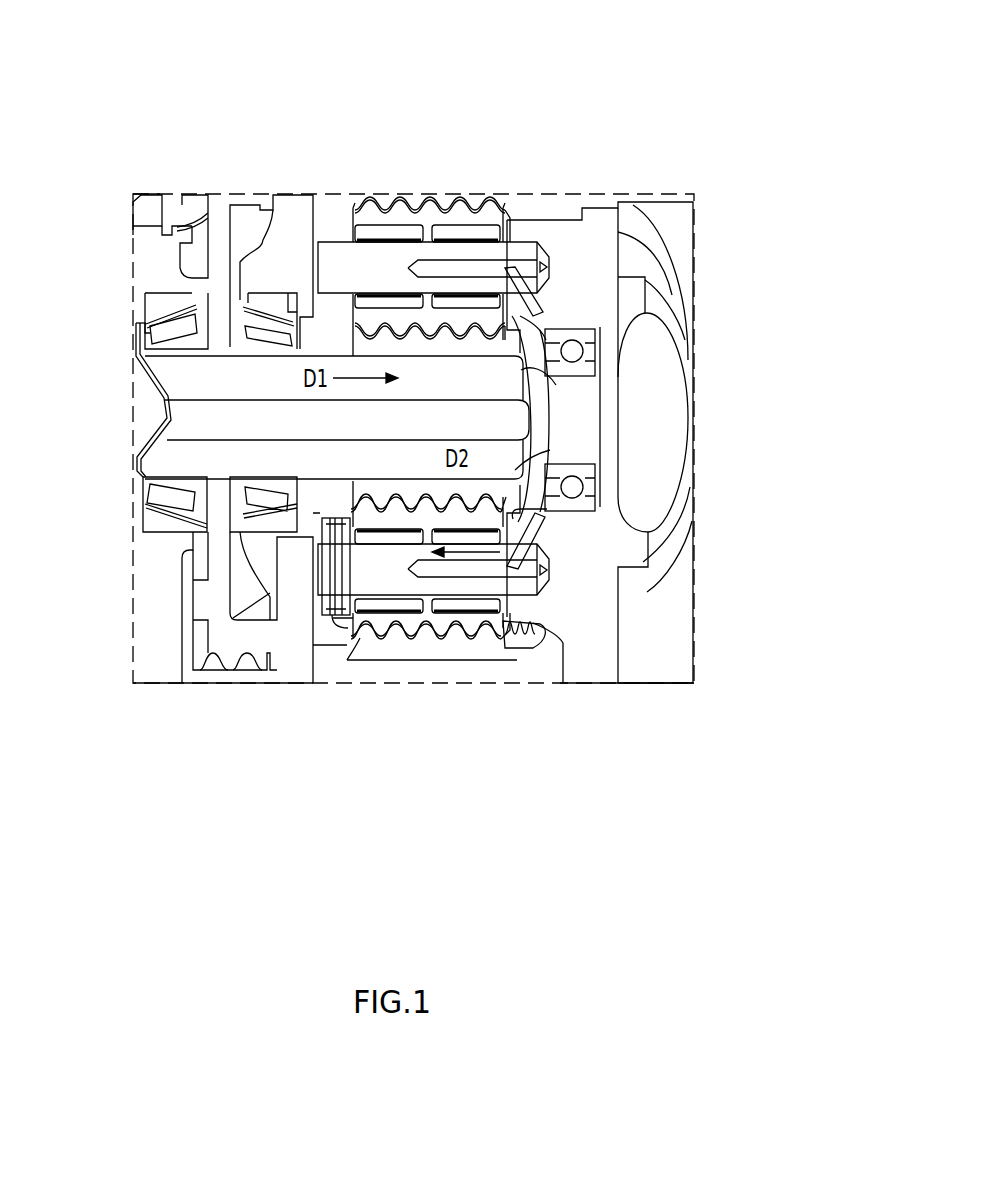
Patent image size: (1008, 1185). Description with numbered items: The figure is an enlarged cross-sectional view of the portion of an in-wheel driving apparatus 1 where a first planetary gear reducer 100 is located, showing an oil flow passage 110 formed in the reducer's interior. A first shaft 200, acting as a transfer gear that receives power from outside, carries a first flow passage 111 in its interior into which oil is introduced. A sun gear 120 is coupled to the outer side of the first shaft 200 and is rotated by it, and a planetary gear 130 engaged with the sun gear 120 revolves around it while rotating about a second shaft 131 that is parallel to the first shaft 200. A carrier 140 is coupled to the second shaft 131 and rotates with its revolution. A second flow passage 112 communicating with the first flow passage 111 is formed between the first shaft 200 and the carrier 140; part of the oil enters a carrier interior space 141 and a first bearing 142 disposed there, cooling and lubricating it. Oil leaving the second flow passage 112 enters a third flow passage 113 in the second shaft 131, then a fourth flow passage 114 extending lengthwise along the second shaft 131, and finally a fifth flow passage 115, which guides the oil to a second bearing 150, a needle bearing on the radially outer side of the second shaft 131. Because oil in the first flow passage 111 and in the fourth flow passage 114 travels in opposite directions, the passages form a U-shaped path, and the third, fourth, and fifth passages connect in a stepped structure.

The in-wheel driving apparatus 1 is at (571, 88).
The first planetary gear reducer 100 is at (626, 192).
The flow passage 110 is at (612, 783).
The first flow passage 111 is at (199, 412).
The second flow passage 112 is at (576, 408).
The third flow passage 113 is at (510, 632).
The fourth flow passage 114 is at (470, 576).
The fifth flow passage 115 is at (425, 602).
The sun gear 120 is at (375, 340).
The planetary gear 130 is at (320, 542).
The second shaft 131 is at (340, 550).
The carrier 140 is at (592, 645).
The carrier interior space 141 is at (582, 375).
The first bearing 142 is at (600, 329).
The second bearing 150 is at (367, 575).
The first shaft 200 is at (200, 371).